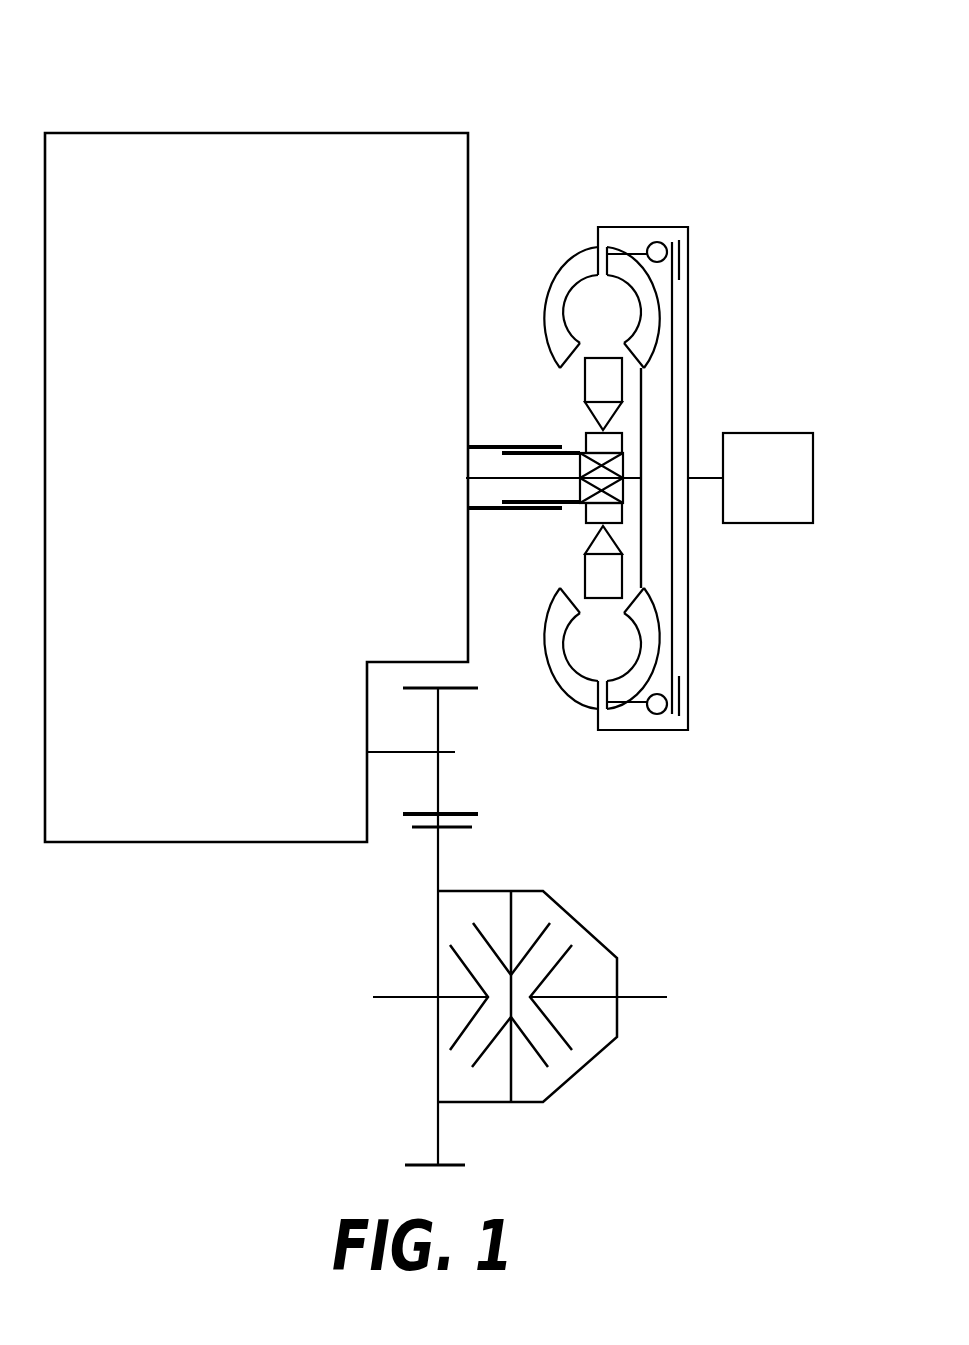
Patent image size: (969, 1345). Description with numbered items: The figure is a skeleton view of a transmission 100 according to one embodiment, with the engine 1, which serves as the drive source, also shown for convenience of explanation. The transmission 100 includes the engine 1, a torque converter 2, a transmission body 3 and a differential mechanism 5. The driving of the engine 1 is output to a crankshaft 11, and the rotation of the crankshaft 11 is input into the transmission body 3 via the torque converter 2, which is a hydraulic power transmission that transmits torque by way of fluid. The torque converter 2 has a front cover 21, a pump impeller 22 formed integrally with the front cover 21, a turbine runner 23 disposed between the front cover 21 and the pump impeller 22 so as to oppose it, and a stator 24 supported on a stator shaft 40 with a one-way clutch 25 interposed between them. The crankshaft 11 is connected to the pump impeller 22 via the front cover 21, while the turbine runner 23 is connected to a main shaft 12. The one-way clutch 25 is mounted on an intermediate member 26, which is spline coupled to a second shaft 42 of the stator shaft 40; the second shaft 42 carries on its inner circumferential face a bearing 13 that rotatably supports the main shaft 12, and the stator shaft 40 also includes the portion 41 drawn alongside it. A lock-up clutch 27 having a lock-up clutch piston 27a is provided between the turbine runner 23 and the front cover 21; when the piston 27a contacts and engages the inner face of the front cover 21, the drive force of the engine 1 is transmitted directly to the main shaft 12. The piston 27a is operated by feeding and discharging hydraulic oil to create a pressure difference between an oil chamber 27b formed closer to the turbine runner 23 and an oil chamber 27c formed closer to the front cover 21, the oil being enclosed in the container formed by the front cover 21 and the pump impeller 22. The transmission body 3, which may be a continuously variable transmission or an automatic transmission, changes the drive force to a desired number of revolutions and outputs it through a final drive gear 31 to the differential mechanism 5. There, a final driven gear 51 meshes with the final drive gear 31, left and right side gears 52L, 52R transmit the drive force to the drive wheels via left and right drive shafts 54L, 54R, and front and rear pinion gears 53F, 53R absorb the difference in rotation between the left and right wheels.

The transmission 100 is at (357, 90).
The engine 1 is at (777, 432).
The torque converter 2 is at (673, 217).
The transmission body 3 is at (474, 165).
The differential mechanism 5 is at (574, 862).
The crankshaft 11 is at (694, 481).
The main shaft 12 is at (482, 481).
The bearing 13 is at (582, 459).
The front cover 21 is at (624, 227).
The pump impeller 22 is at (573, 268).
The turbine runner 23 is at (652, 320).
The stator 24 is at (597, 378).
The one-way clutch 25 is at (600, 420).
The intermediate member 26 is at (587, 434).
The lock-up clutch 27 is at (686, 263).
The lock-up clutch piston 27a is at (677, 357).
The oil chamber 27b is at (650, 400).
The oil chamber 27c is at (677, 431).
The final drive gear 31 is at (440, 782).
The stator shaft 40 is at (485, 560).
The clutch outer plates 41 is at (527, 512).
The second shaft 42 is at (577, 503).
The final driven gear 51 is at (440, 866).
The left side gear 52L is at (450, 952).
The right side gear 52R is at (567, 957).
The front pinion gear 53F is at (545, 937).
The rear pinion gear 53R is at (543, 1057).
The left drive shaft 54L is at (405, 1000).
The right drive shaft 54R is at (637, 1000).